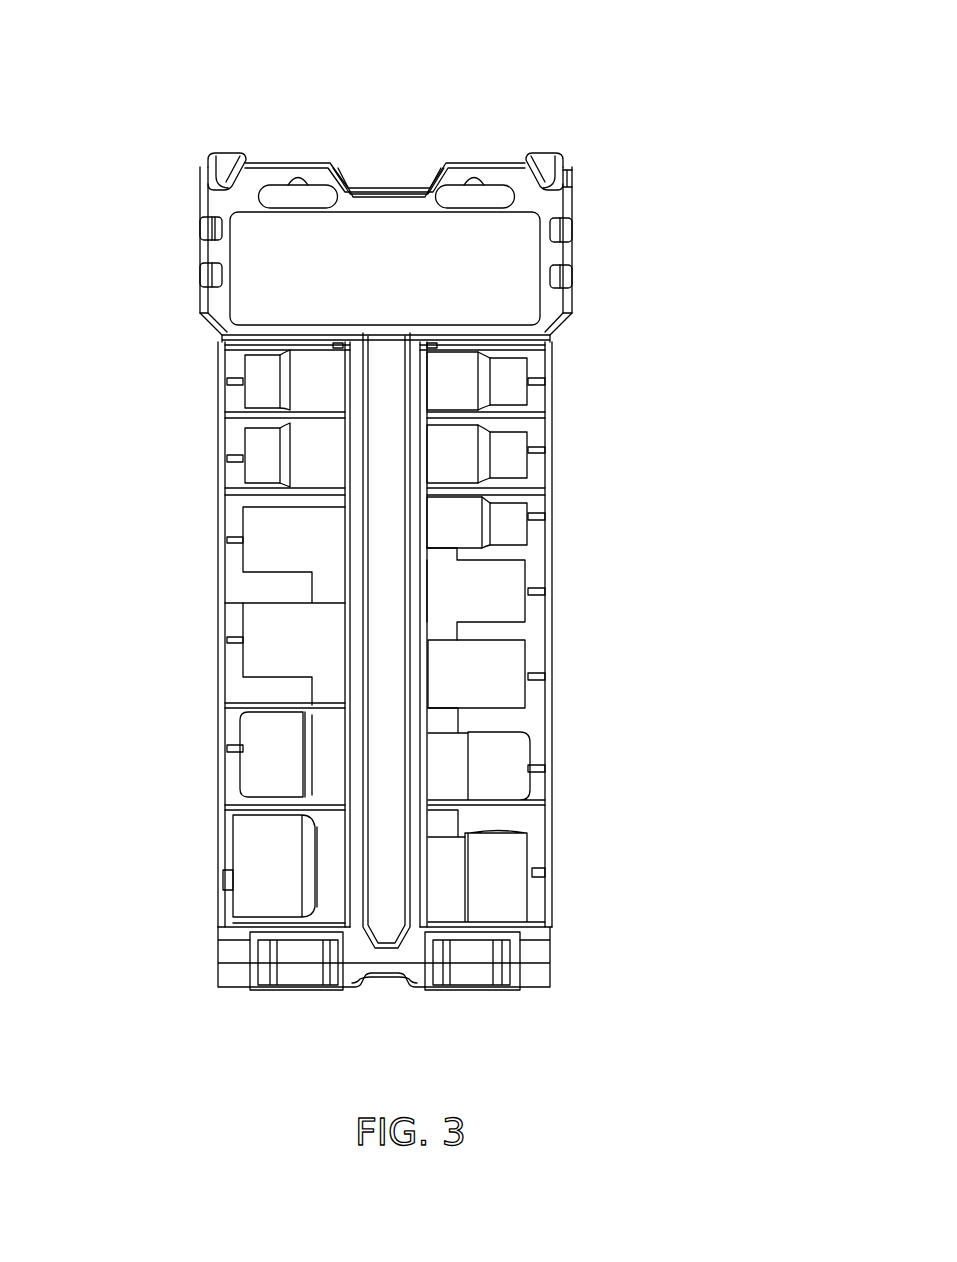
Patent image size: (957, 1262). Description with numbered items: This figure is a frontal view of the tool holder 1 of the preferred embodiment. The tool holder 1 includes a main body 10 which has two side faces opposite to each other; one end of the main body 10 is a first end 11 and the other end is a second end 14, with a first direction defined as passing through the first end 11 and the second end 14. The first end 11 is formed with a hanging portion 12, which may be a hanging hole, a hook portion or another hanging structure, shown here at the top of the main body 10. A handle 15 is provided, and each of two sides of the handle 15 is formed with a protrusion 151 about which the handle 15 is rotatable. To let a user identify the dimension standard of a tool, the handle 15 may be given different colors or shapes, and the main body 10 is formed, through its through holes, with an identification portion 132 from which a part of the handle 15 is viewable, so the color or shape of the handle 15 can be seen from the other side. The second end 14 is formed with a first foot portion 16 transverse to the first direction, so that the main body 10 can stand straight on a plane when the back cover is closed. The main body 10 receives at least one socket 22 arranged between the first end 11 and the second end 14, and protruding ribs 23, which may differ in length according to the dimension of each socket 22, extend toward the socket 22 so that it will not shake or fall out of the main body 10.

The tool holder 1 is at (196, 118).
The main body 10 is at (393, 905).
The first end 11 is at (628, 262).
The hanging portion 12 is at (459, 136).
The second end 14 is at (614, 976).
The handle 15 is at (546, 165).
The protrusion 151 is at (573, 180).
The identification portion 132 is at (178, 277).
The first foot portion 16 is at (268, 988).
The socket 22 is at (494, 598).
The protruding rib 23 is at (540, 519).